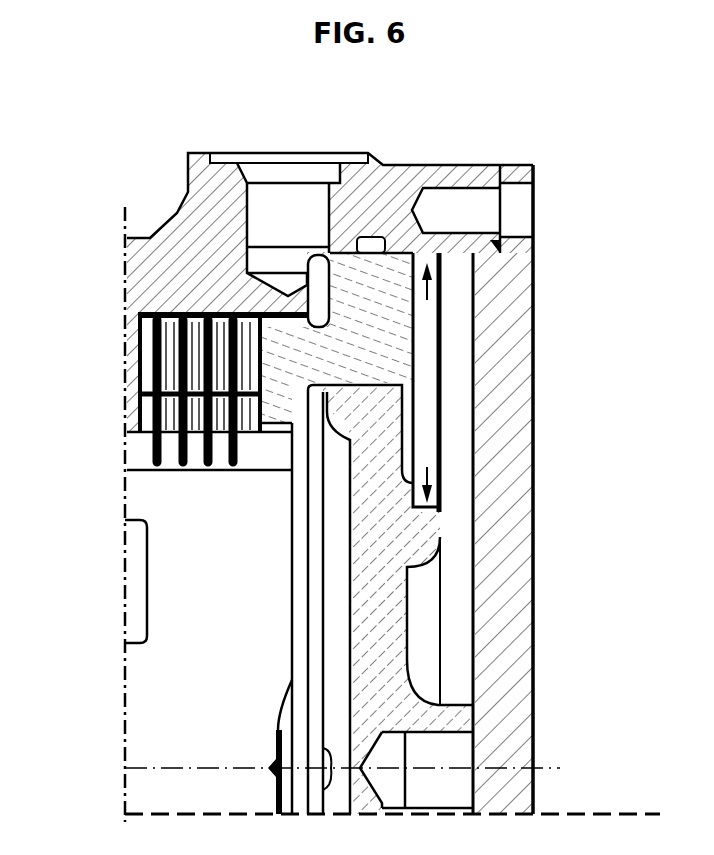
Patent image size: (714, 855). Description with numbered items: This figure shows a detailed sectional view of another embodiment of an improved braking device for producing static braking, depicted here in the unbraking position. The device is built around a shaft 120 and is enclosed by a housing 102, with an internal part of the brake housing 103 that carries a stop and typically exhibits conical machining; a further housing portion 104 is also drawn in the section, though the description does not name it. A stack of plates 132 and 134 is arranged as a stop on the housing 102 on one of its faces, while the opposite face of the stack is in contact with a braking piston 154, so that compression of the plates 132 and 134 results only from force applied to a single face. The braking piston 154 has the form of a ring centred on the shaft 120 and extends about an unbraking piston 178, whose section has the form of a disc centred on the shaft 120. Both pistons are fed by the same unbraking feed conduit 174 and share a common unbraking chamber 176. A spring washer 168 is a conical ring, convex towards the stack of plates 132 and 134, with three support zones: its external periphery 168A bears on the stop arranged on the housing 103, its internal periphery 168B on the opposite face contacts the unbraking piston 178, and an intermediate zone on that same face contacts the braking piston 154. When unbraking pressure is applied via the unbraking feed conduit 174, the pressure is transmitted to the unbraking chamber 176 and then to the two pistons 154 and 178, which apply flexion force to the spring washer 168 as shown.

The housing 102 is at (193, 243).
The internal part of the brake housing 103 is at (500, 445).
The bore 104 is at (465, 208).
The shaft 120 is at (208, 667).
The plate 132 is at (152, 443).
The plate 134 is at (172, 328).
The braking piston 154 is at (358, 325).
The spring washer 168 is at (428, 338).
The external periphery 168A is at (437, 297).
The internal periphery 168B is at (437, 465).
The unbraking feed conduit 174 is at (288, 215).
The unbraking chamber 176 is at (315, 535).
The unbraking piston 178 is at (377, 608).